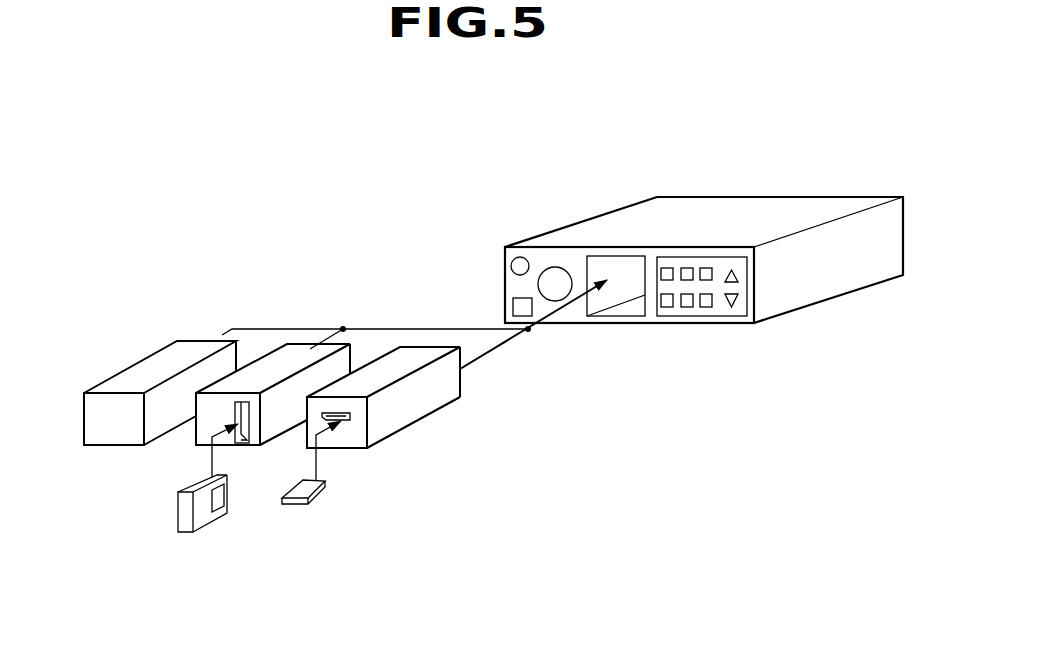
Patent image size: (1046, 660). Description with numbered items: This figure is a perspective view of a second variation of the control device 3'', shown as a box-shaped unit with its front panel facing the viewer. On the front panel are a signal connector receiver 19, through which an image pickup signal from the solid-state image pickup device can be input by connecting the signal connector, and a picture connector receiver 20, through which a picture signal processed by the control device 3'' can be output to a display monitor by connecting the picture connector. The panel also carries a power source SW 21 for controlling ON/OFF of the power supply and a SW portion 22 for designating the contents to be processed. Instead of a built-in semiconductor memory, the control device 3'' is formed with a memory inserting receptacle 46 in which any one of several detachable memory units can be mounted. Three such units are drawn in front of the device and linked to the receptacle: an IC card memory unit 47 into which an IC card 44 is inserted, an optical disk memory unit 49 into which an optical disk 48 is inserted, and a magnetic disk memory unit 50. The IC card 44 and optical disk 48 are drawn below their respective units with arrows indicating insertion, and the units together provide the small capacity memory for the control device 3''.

The control device 3'' is at (704, 220).
The signal connector receiver 19 is at (563, 267).
The picture connector receiver 20 is at (513, 253).
The power source SW 21 is at (507, 305).
The SW portion 22 is at (733, 316).
The memory inserting receptacle 46 is at (625, 316).
The IC card memory unit 47 is at (408, 345).
The optical disk 48 is at (212, 522).
The optical disk memory unit 49 is at (299, 343).
The magnetic disk memory unit 50 is at (162, 348).
The IC card 44 is at (320, 493).